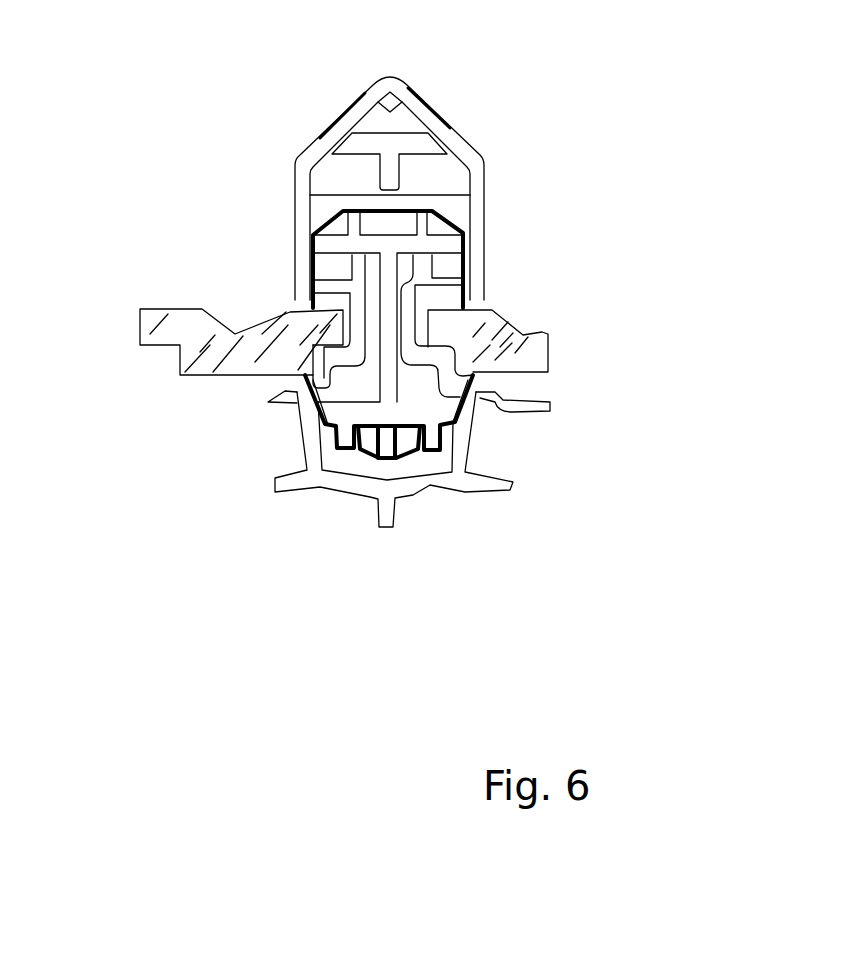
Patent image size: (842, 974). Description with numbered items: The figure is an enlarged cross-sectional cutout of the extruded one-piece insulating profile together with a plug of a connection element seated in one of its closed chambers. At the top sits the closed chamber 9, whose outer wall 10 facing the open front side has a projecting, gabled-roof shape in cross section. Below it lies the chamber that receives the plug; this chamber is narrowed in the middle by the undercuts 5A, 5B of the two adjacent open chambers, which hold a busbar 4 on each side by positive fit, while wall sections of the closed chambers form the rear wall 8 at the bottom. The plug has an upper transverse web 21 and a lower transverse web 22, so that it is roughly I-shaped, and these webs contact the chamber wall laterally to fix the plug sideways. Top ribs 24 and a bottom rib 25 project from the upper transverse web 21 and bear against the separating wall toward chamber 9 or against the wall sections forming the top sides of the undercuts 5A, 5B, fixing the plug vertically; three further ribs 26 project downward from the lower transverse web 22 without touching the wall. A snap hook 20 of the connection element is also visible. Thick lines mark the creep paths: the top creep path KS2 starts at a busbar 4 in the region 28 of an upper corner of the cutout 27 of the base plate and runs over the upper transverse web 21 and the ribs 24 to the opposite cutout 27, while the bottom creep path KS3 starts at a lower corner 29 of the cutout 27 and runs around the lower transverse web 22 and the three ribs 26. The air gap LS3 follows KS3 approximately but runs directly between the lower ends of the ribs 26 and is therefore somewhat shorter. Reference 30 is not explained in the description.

The busbar 4 is at (168, 333).
The undercut 5A is at (559, 286).
The undercut 5B is at (201, 313).
The rear wall 8 is at (460, 493).
The chamber 9 is at (335, 178).
The outer wall 10 is at (355, 115).
The snap hook 20 is at (390, 176).
The upper transverse web 21 is at (438, 247).
The lower transverse web 22 is at (385, 479).
The top rib 24 is at (353, 222).
The bottom rib 25 is at (353, 268).
The rib 26 is at (387, 440).
The cutout 27 is at (378, 286).
The region of an upper corner of the cutout 28 is at (463, 308).
The lower corner of the cutout 29 is at (512, 398).
The channel 30 is at (417, 322).
The top creep path KS2 is at (400, 211).
The bottom creep path KS3 is at (447, 425).
The third air gap LS3 is at (413, 458).